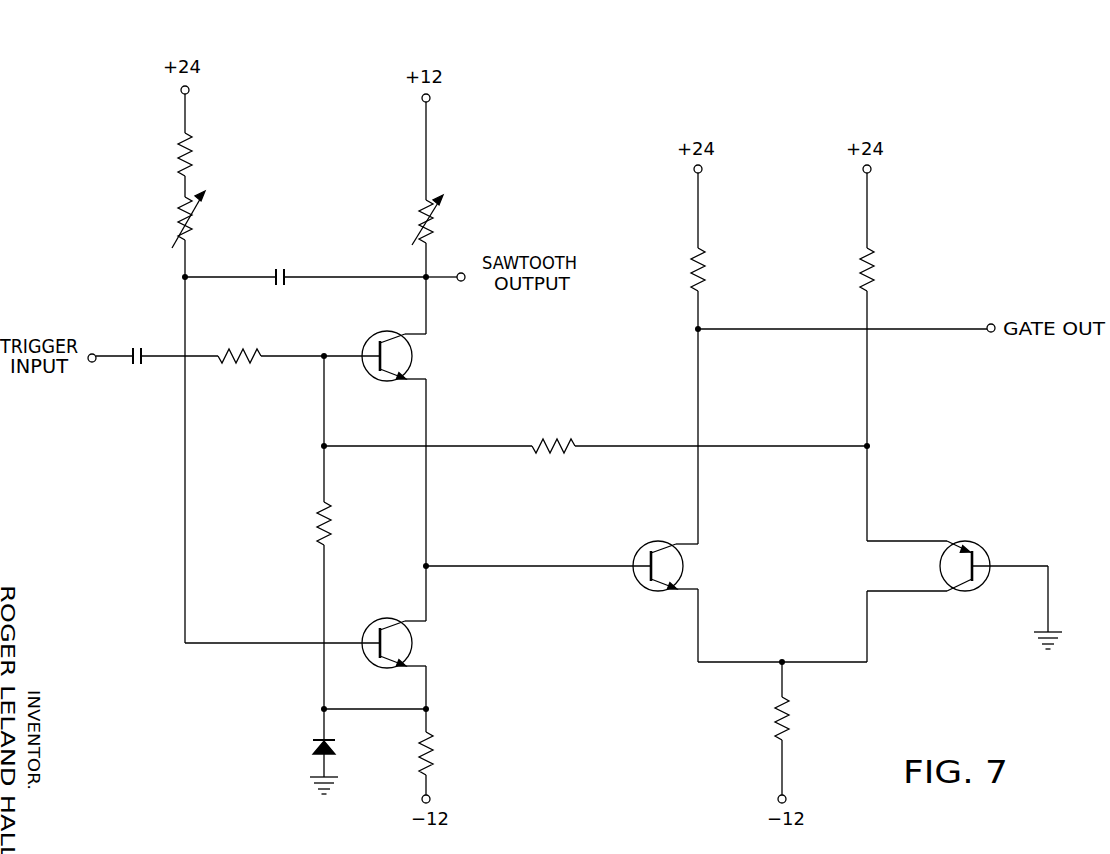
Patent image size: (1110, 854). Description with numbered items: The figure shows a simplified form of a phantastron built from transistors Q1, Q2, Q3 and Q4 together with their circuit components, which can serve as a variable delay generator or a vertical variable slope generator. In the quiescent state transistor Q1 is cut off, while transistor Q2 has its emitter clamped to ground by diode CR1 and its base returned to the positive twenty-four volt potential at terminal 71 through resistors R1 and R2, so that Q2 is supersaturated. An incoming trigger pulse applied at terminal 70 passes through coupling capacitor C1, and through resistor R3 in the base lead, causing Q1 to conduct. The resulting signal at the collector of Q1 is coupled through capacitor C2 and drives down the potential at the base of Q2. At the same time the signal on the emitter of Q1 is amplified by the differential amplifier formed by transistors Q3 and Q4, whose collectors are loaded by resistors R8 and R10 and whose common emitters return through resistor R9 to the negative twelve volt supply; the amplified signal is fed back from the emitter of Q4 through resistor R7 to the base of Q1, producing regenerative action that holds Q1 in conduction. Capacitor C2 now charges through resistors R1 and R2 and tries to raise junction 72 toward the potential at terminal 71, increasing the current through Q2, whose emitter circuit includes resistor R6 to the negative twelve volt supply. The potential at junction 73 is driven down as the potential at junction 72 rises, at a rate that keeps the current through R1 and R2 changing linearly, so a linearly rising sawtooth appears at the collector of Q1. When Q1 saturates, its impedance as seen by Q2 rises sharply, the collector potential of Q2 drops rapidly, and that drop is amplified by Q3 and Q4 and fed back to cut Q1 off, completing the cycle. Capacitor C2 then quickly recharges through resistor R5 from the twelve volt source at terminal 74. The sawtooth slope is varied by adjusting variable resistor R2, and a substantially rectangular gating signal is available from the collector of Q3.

The terminal 70 is at (95, 354).
The terminal 71 is at (181, 90).
The junction 72 is at (182, 277).
The junction 73 is at (430, 283).
The terminal 74 is at (430, 99).
The resistor R1 is at (191, 152).
The variable resistor R2 is at (194, 225).
The resistor R3 is at (233, 362).
The resistor R5 is at (434, 232).
The resistor R6 is at (434, 748).
The resistor R7 is at (553, 447).
The resistor R8 is at (703, 282).
The resistor R9 is at (789, 722).
The resistor R10 is at (872, 282).
The coupling capacitor C1 is at (136, 367).
The capacitor C2 is at (287, 272).
The diode CR1 is at (314, 760).
The transistor Q1 is at (377, 333).
The transistor Q2 is at (394, 621).
The transistor Q3 is at (645, 548).
The transistor Q4 is at (968, 545).